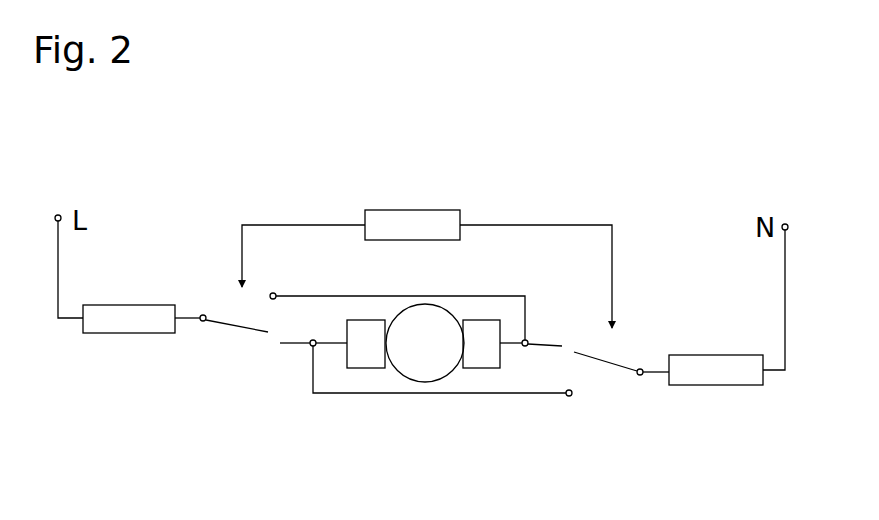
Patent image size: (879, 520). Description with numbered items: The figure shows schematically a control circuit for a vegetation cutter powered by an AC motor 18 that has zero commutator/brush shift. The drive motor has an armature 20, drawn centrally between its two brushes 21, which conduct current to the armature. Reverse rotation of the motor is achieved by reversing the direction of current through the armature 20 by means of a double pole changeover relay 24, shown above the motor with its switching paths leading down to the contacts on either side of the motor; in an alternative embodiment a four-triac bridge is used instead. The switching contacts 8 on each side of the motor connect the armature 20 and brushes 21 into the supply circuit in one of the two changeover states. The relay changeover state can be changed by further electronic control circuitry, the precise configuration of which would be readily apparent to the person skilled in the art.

The switch 8 is at (421, 345).
The AC motor 18 is at (422, 401).
The armature 20 is at (425, 370).
The brushes 21 is at (360, 363).
The double pole changeover relay 24 is at (410, 213).